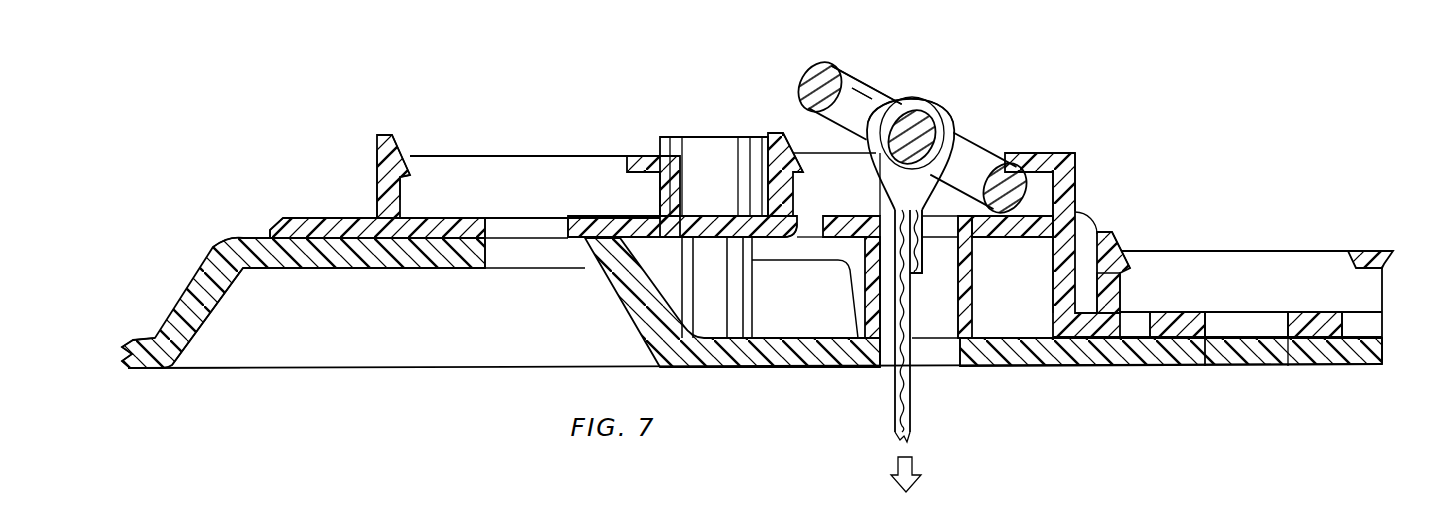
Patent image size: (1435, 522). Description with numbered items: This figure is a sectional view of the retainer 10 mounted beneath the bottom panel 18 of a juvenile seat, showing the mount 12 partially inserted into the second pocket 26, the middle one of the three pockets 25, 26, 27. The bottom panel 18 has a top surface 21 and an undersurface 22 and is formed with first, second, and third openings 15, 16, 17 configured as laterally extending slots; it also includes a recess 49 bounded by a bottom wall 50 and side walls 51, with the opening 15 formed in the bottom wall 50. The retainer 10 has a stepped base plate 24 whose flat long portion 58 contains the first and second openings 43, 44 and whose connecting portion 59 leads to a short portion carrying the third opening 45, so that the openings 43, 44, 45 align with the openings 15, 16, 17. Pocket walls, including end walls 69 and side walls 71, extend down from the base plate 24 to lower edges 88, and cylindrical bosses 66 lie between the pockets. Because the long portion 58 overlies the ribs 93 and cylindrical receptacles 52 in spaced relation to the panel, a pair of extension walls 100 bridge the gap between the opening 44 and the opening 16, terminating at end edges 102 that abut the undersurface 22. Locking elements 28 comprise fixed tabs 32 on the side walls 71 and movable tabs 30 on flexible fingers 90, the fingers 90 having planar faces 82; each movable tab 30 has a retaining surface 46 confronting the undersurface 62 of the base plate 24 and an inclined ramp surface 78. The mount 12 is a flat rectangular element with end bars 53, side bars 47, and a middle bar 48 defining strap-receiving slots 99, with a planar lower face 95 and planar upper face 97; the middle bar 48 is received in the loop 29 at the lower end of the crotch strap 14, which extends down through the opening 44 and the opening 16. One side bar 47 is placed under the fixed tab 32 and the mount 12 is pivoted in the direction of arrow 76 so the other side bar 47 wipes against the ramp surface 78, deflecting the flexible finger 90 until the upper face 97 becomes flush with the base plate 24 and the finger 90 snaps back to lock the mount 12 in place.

The retainer 10 is at (487, 92).
The mount 12 is at (785, 61).
The crotch strap 14 is at (897, 420).
The first opening 15 is at (497, 272).
The second opening 16 is at (950, 350).
The third opening 17 is at (1207, 347).
The bottom panel 18 is at (168, 287).
The top surface 21 is at (140, 370).
The undersurface 22 is at (138, 338).
The stepped base plate 24 is at (270, 216).
The first pocket 25 is at (473, 150).
The second pocket 26 is at (812, 163).
The third pocket 27 is at (1242, 245).
The locking elements 28 is at (377, 123).
The loop 29 is at (927, 190).
The movable tab 30 is at (377, 148).
The fixed tab 32 is at (1037, 158).
The first opening 43 is at (488, 228).
The second opening 44 is at (957, 227).
The third opening 45 is at (1292, 322).
The retaining surface 46 is at (410, 180).
The side bar 47 is at (822, 72).
The middle bar 48 is at (927, 103).
The recess 49 is at (243, 372).
The bottom wall 50 is at (242, 245).
The side walls 51 is at (218, 300).
The cylindrical receptacle 52 is at (680, 300).
The end bar 53 is at (888, 88).
The flat long portion 58 is at (297, 228).
The connecting portion 59 is at (1058, 272).
The undersurface 62 is at (333, 217).
The cylindrical boss 66 is at (697, 152).
The end wall 69 is at (545, 170).
The side wall 71 is at (660, 196).
The arrow 76 is at (830, 195).
The inclined ramp surface 78 is at (792, 150).
The planar face 82 is at (418, 240).
The lower edge 88 is at (1190, 252).
The flexible finger 90 is at (378, 196).
The rib 93 is at (665, 312).
The planar lower face 95 is at (897, 95).
The planar upper face 97 is at (836, 178).
The strap-receiving slot 99 is at (852, 98).
The extension wall 100 is at (872, 302).
The end edge 102 is at (875, 340).